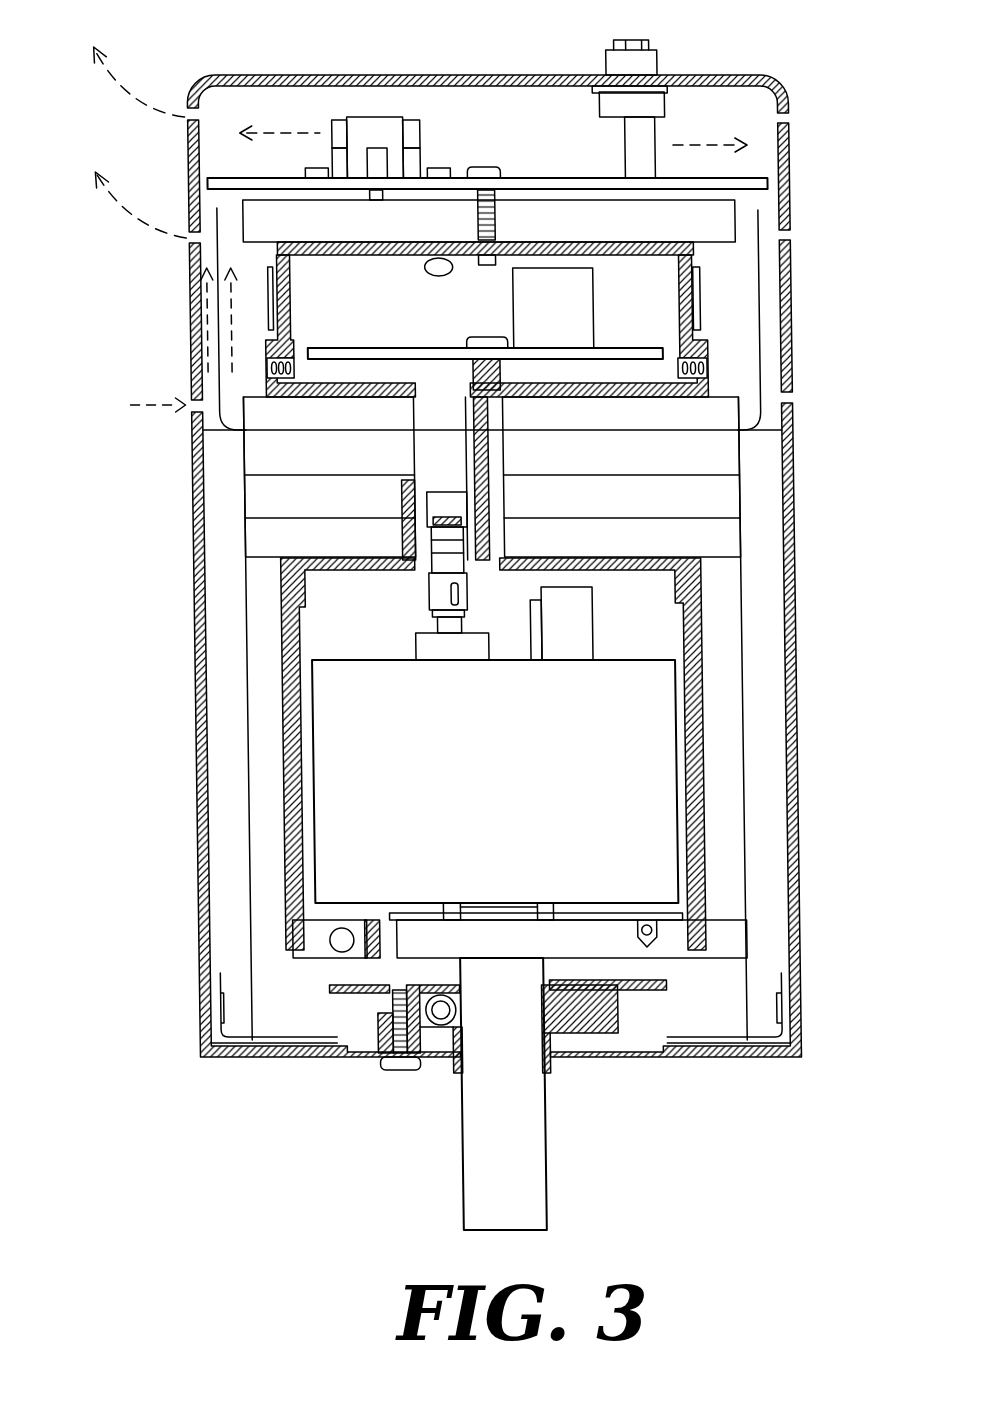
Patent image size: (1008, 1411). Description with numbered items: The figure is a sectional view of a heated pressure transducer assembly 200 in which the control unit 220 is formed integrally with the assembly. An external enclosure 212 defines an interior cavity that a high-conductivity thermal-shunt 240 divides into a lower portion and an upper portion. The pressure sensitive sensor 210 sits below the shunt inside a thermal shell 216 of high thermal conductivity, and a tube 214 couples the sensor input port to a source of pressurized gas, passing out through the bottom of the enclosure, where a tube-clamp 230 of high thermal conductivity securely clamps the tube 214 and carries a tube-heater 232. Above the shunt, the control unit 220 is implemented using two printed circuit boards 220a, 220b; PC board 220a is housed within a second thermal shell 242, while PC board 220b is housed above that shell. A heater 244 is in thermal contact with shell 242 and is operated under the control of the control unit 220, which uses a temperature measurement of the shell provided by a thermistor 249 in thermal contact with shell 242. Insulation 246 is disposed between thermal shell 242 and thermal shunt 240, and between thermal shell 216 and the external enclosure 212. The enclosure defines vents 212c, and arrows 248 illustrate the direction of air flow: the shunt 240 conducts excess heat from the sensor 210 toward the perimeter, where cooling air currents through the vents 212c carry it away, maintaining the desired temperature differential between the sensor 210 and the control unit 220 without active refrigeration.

The transducer assembly 200 is at (478, 626).
The pressure sensitive sensor 210 is at (519, 757).
The external enclosure 212 is at (789, 758).
The vents 212c is at (788, 118).
The tube 214 is at (529, 1146).
The thermal shell 216 is at (695, 850).
The control unit 220 is at (455, 120).
The PC board 220a is at (376, 348).
The PC board 220b is at (555, 186).
The tube-clamp 230 is at (606, 1013).
The tube-heater 232 is at (332, 986).
The thermal-shunt 240 is at (756, 310).
The thermal shell 242 is at (265, 345).
The heater 244 is at (264, 290).
The insulation 246 is at (737, 252).
The arrows 248 is at (122, 100).
The thermistor 249 is at (438, 277).